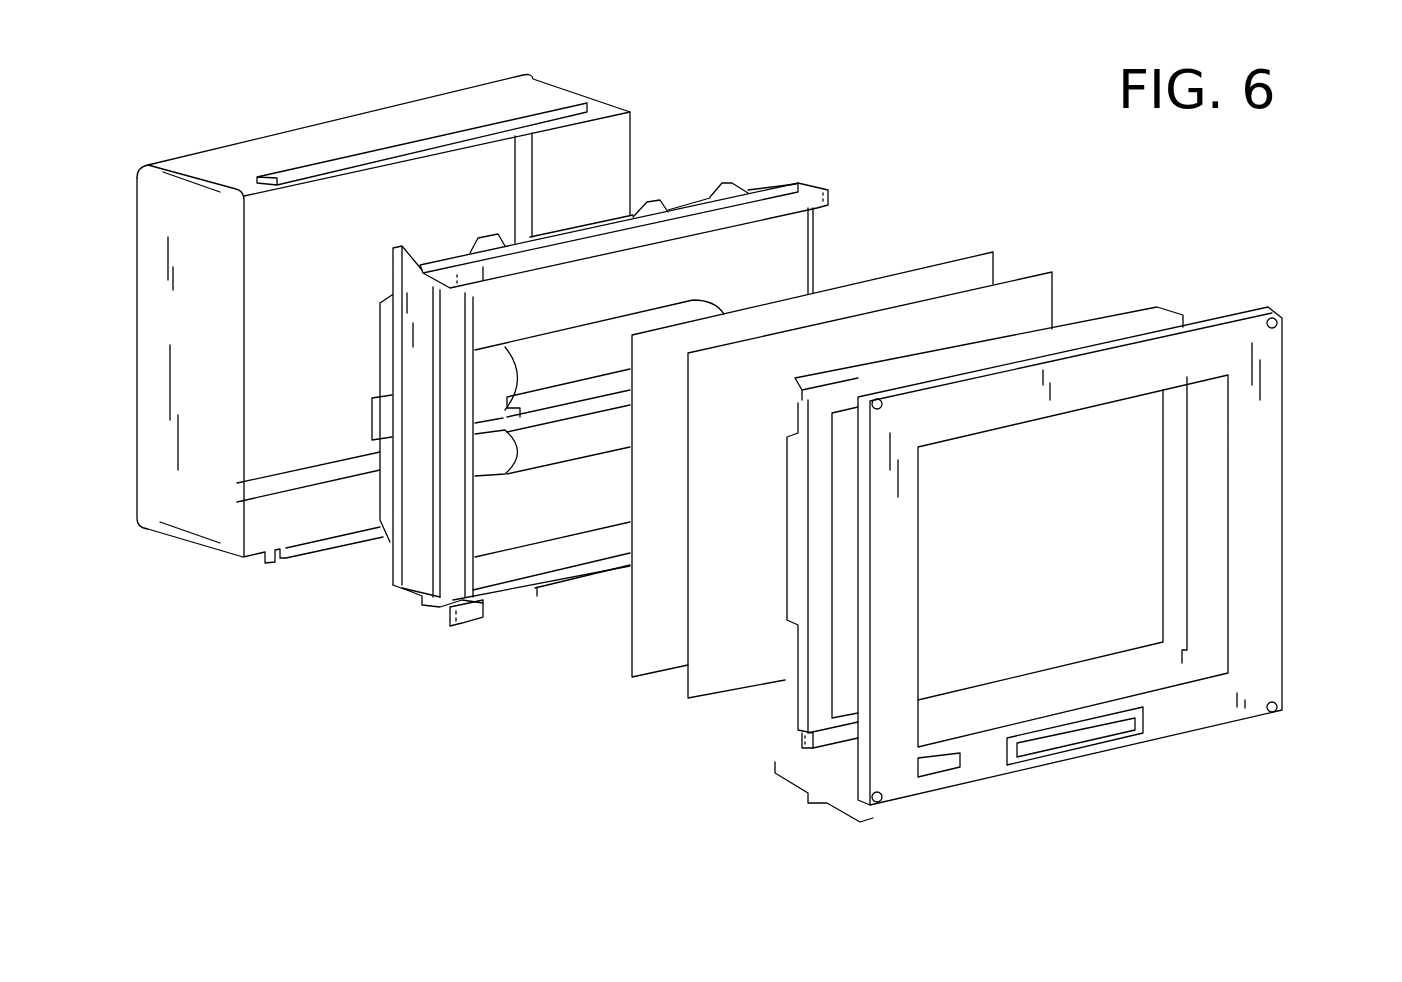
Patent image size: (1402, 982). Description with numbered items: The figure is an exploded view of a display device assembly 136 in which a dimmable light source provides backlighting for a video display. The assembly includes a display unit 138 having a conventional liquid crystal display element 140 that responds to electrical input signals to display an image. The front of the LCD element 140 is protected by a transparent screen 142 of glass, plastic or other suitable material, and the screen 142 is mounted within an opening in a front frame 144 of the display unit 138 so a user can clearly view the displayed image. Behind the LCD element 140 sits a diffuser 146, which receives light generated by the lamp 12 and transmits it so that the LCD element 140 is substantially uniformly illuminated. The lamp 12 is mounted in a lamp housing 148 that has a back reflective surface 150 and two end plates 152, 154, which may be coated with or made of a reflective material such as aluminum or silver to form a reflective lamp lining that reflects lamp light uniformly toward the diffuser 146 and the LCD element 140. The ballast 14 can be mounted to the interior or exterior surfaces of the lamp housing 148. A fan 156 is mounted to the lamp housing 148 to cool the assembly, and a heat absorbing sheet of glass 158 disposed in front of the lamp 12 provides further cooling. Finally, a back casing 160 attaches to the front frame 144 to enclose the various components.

The lamp 12 is at (567, 333).
The ballast 14 is at (535, 590).
The display device assembly 136 is at (855, 95).
The display unit 138 is at (816, 801).
The liquid crystal display (LCD) element 140 is at (790, 688).
The transparent screen 142 is at (1203, 663).
The front frame 144 is at (1257, 557).
The diffuser 146 is at (1022, 278).
The lamp housing 148 is at (617, 428).
The back reflective surface 150 is at (497, 537).
The end plate 152 is at (453, 570).
The end plate 154 is at (815, 243).
The fan 156 is at (590, 215).
The heat absorbing sheet of glass 158 is at (957, 259).
The back casing 160 is at (583, 90).